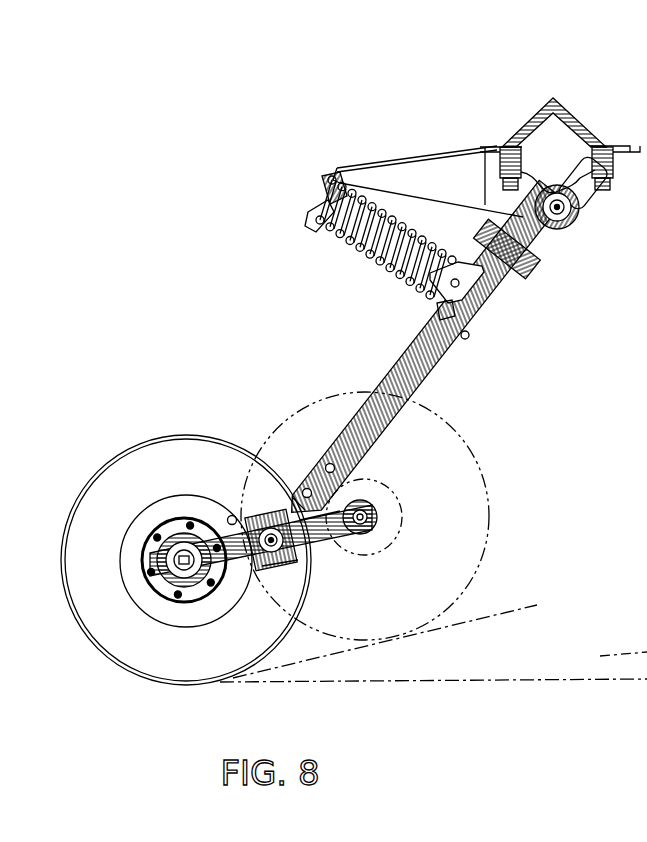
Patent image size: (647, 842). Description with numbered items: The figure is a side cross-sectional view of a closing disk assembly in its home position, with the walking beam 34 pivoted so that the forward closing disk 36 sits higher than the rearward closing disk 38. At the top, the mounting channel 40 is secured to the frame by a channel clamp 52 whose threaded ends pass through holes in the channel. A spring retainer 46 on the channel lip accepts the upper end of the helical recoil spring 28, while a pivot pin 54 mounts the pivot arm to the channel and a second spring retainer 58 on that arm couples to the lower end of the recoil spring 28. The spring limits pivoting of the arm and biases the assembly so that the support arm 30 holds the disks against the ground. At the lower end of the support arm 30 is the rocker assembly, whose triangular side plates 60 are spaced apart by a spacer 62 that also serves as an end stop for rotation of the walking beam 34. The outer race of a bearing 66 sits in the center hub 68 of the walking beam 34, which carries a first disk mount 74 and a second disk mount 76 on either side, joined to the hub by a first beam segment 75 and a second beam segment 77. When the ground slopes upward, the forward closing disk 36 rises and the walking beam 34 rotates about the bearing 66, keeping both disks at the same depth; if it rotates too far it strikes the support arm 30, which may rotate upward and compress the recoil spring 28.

The helical recoil spring 28 is at (373, 243).
The support arm 30 is at (493, 287).
The walking beam 34 is at (298, 556).
The forward closing disk 36 is at (452, 582).
The rearward closing disk 38 is at (110, 617).
The mounting channel 40 is at (435, 172).
The spring retainer 46 is at (337, 178).
The channel clamp 52 is at (545, 102).
The pivot pin 54 is at (560, 212).
The spring retainer 58 is at (465, 275).
The triangular side plates 60 is at (282, 503).
The spacer 62 is at (230, 516).
The bearing 66 is at (260, 554).
The center hub 68 is at (283, 556).
The first disk mount 74 is at (370, 528).
The first beam segment 75 is at (313, 529).
The second disk mount 76 is at (178, 556).
The second beam segment 77 is at (227, 566).